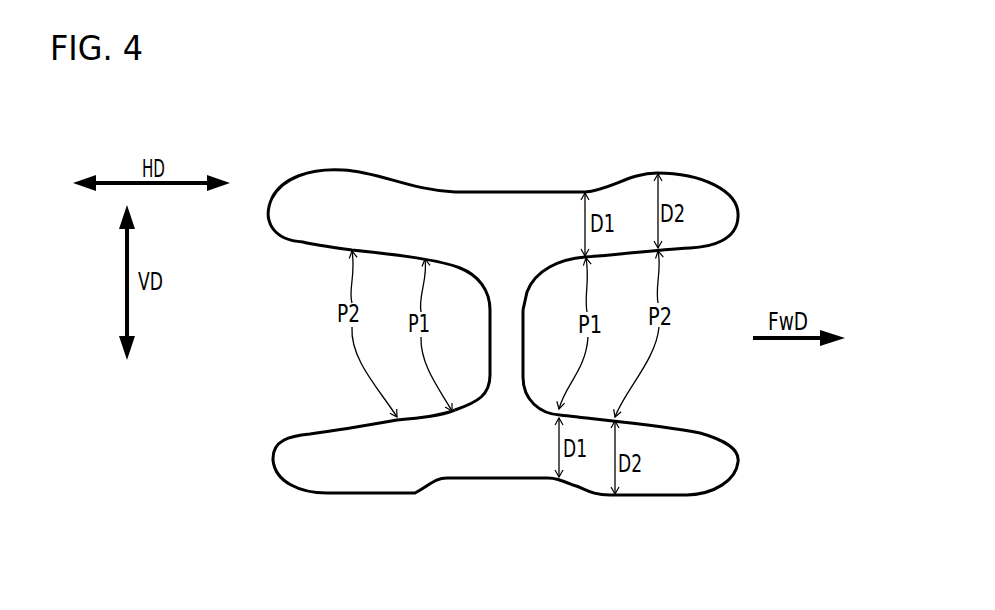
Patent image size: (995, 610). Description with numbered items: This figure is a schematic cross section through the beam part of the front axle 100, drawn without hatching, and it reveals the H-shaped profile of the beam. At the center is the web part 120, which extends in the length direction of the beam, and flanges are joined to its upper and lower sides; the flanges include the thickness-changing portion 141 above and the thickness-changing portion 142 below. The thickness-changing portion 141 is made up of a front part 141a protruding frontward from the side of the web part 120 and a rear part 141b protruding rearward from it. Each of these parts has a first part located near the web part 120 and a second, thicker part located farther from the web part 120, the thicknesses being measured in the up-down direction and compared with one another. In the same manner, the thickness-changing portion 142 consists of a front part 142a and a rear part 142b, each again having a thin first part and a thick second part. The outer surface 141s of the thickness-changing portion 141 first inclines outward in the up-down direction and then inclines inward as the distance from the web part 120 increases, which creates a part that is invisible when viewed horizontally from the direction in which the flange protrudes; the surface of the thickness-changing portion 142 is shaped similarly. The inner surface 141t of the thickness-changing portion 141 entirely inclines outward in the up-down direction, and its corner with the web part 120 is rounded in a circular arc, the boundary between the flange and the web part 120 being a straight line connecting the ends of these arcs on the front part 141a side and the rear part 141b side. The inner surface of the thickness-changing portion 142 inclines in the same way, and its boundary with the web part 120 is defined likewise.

The front axle 100 is at (283, 100).
The web part 120 is at (491, 352).
The thickness-changing portion 141 is at (367, 120).
The front part 141a is at (738, 166).
The rear part 141b is at (503, 166).
The outer surface 141s is at (455, 190).
The inner surface 141t is at (317, 248).
The thickness-changing portion 142 is at (658, 557).
The front part 142a is at (738, 513).
The rear part 142b is at (503, 513).